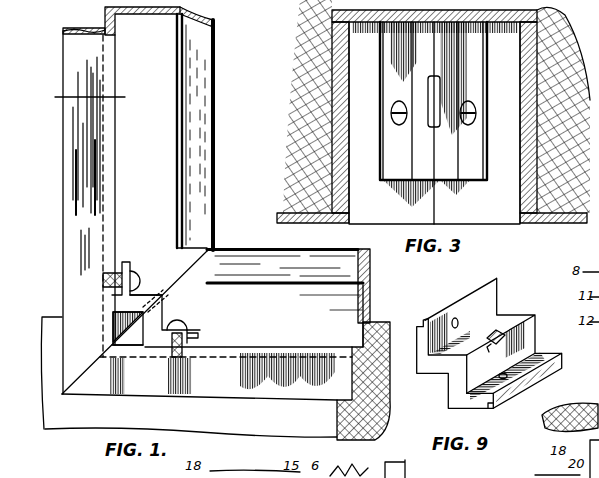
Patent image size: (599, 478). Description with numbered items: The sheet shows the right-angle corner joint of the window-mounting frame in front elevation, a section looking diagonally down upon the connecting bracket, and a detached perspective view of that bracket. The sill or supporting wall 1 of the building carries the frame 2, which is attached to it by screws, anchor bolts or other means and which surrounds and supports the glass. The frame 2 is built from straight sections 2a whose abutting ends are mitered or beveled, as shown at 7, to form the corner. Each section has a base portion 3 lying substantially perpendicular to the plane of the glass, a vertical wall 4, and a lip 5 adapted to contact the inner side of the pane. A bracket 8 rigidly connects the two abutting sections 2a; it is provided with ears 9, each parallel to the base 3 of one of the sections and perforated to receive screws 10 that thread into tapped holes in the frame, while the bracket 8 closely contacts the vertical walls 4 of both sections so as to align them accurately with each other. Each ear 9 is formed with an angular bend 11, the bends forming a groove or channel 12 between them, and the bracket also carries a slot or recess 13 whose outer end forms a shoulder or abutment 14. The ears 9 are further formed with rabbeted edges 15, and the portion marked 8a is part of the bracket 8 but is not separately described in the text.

In FIG. 1, the sill or supporting wall 1 is at (380, 425).
In FIG. 3, the sill or supporting wall 1 is at (312, 58).
In FIG. 1, the frame 2 is at (172, 133).
In FIG. 3, the frame 2 is at (533, 117).
In FIG. 1, the straight sections 2a is at (388, 288).
In FIG. 3, the straight sections 2a is at (568, 163).
In FIG. 1, the base portion 3 is at (78, 186).
In FIG. 3, the base portion 3 is at (434, 133).
In FIG. 1, the vertical wall 4 is at (135, 25).
In FIG. 3, the vertical wall 4 is at (362, 6).
In FIG. 1, the lip 5 is at (218, 80).
In FIG. 3, the lip 5 is at (276, 237).
In FIG. 1, the mitered abutting ends 7 is at (200, 250).
In FIG. 3, the mitered abutting ends 7 is at (428, 30).
In FIG. 1, the bracket 8 is at (159, 315).
In FIG. 3, the bracket 8 is at (437, 120).
In FIG. 9, the bracket 8 is at (483, 345).
In FIG. 9, the cleat flange 8a is at (420, 374).
In FIG. 1, the ears 9 is at (118, 293).
In FIG. 3, the ears 9 is at (392, 70).
In FIG. 9, the ears 9 is at (480, 293).
In FIG. 1, the screws 10 is at (138, 275).
In FIG. 3, the screws 10 is at (395, 120).
In FIG. 1, the angular bend 11 is at (135, 300).
In FIG. 3, the angular bend 11 is at (418, 150).
In FIG. 9, the angular bend 11 is at (509, 315).
In FIG. 1, the groove or channel 12 is at (130, 345).
In FIG. 9, the groove or channel 12 is at (440, 382).
In FIG. 1, the slot or recess 13 is at (172, 307).
In FIG. 3, the slot or recess 13 is at (430, 88).
In FIG. 9, the slot or recess 13 is at (492, 348).
In FIG. 3, the shoulder or abutment 14 is at (440, 122).
In FIG. 1, the rabbeted edges 15 is at (118, 265).
In FIG. 3, the rabbeted edges 15 is at (380, 172).
In FIG. 9, the rabbeted edges 15 is at (418, 325).